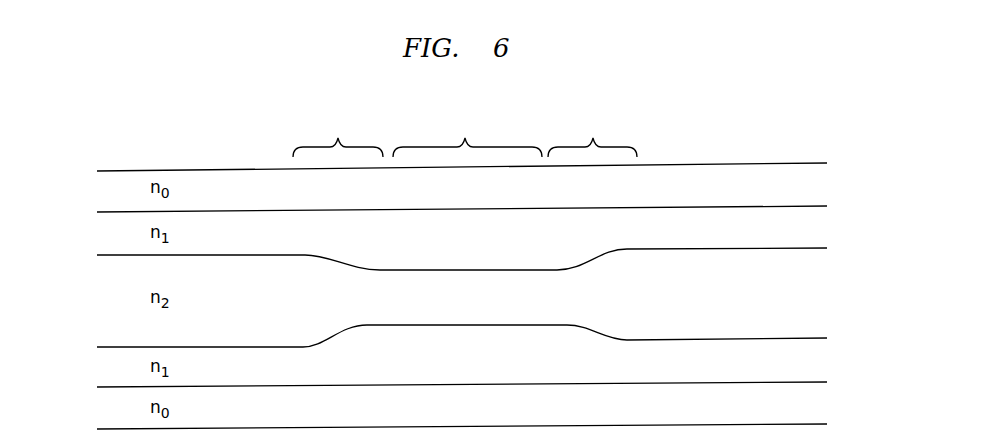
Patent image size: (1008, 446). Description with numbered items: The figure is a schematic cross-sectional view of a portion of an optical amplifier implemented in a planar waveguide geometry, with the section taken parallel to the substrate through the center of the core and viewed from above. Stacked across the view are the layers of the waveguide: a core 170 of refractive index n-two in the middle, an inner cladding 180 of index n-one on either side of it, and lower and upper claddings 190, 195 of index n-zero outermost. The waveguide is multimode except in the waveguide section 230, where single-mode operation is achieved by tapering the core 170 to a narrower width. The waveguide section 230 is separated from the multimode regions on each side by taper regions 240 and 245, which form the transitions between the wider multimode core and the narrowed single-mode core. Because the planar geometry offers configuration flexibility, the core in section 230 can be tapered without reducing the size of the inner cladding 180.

The upper cladding 195 is at (453, 198).
The core 170 is at (708, 304).
The inner cladding 180 is at (455, 365).
The lower cladding 190 is at (455, 416).
The taper region 240 is at (338, 133).
The waveguide section 230 is at (467, 133).
The taper region 245 is at (592, 133).